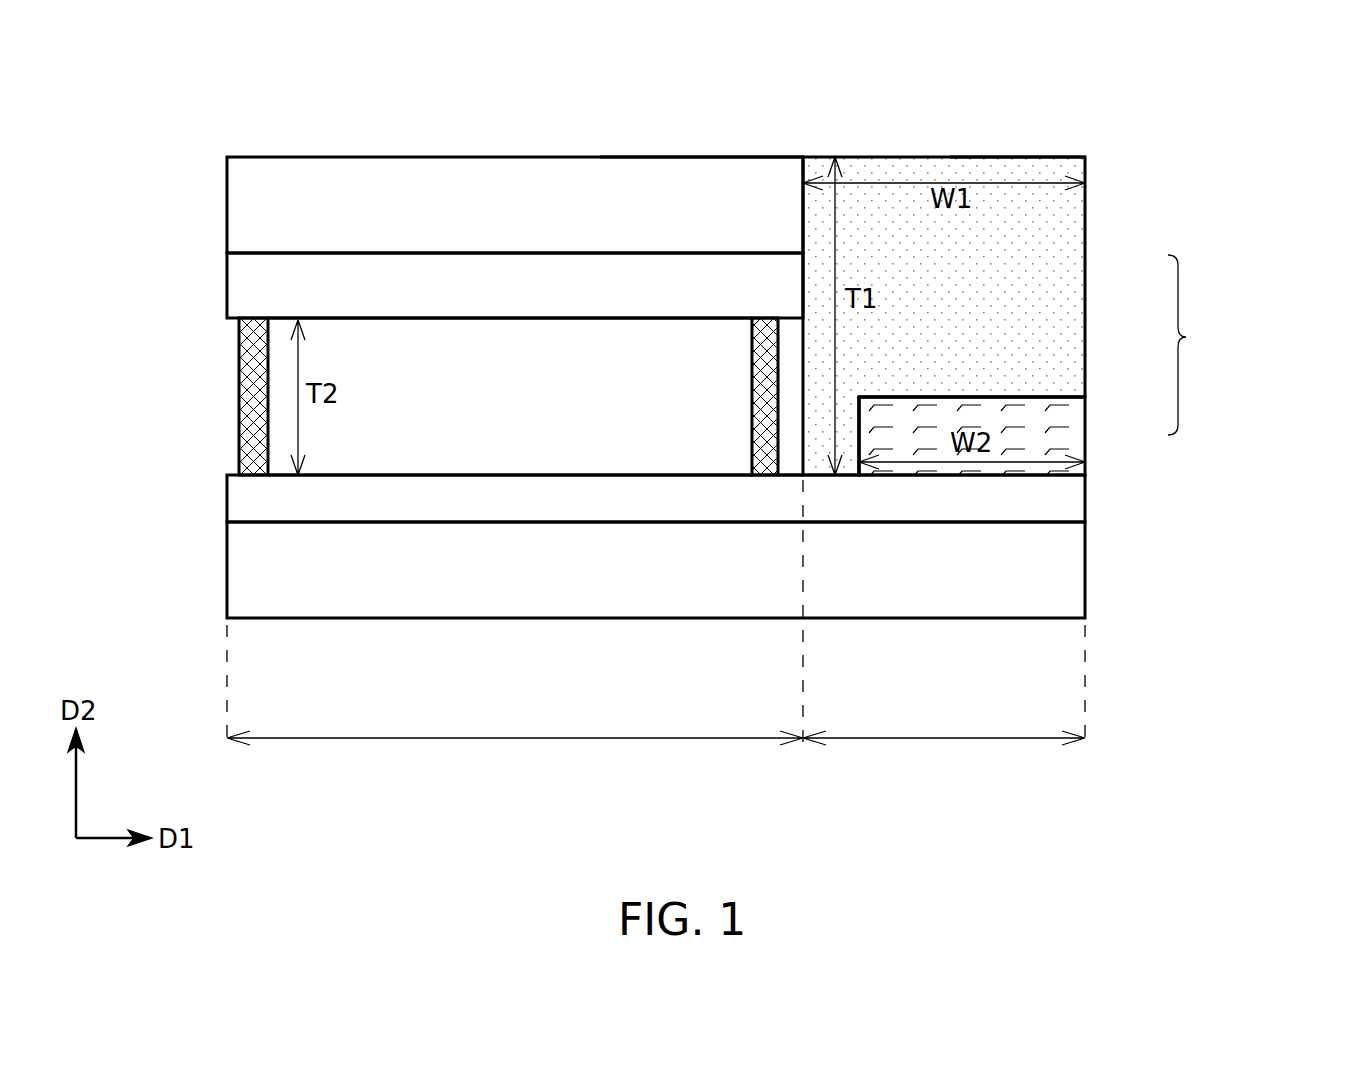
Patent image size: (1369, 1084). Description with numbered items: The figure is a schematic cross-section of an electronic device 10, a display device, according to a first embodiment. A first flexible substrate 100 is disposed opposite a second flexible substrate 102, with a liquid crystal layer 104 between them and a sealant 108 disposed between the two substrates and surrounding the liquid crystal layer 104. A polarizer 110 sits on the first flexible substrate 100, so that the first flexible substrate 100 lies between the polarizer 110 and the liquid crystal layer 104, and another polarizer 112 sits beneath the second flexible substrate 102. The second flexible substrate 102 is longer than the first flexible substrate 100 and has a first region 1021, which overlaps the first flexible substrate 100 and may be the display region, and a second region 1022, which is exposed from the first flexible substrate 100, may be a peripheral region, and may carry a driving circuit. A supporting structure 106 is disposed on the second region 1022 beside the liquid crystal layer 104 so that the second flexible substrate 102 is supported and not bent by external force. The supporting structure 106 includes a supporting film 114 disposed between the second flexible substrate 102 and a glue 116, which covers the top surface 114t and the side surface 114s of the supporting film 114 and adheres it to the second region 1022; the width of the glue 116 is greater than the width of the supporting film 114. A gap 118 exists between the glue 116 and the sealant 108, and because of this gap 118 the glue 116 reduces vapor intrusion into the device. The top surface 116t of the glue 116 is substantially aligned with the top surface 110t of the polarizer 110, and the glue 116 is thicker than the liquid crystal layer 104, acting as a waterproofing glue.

The electronic device 10 is at (1208, 118).
The first flexible substrate 100 is at (536, 301).
The second flexible substrate 102 is at (536, 505).
The first region 1021 is at (515, 722).
The second region 1022 is at (944, 722).
The liquid crystal layer 104 is at (536, 411).
The supporting structure 106 is at (1203, 345).
The sealant 108 is at (238, 398).
The polarizer 110 is at (536, 227).
The top surface of polarizer 110t is at (658, 157).
The polarizer 112 is at (536, 581).
The supporting film 114 is at (1085, 422).
The side surface of supporting film 114s is at (857, 422).
The top surface of supporting film 114t is at (1004, 396).
The glue 116 is at (1085, 285).
The top surface of glue 116t is at (1055, 155).
The gap 118 is at (790, 463).